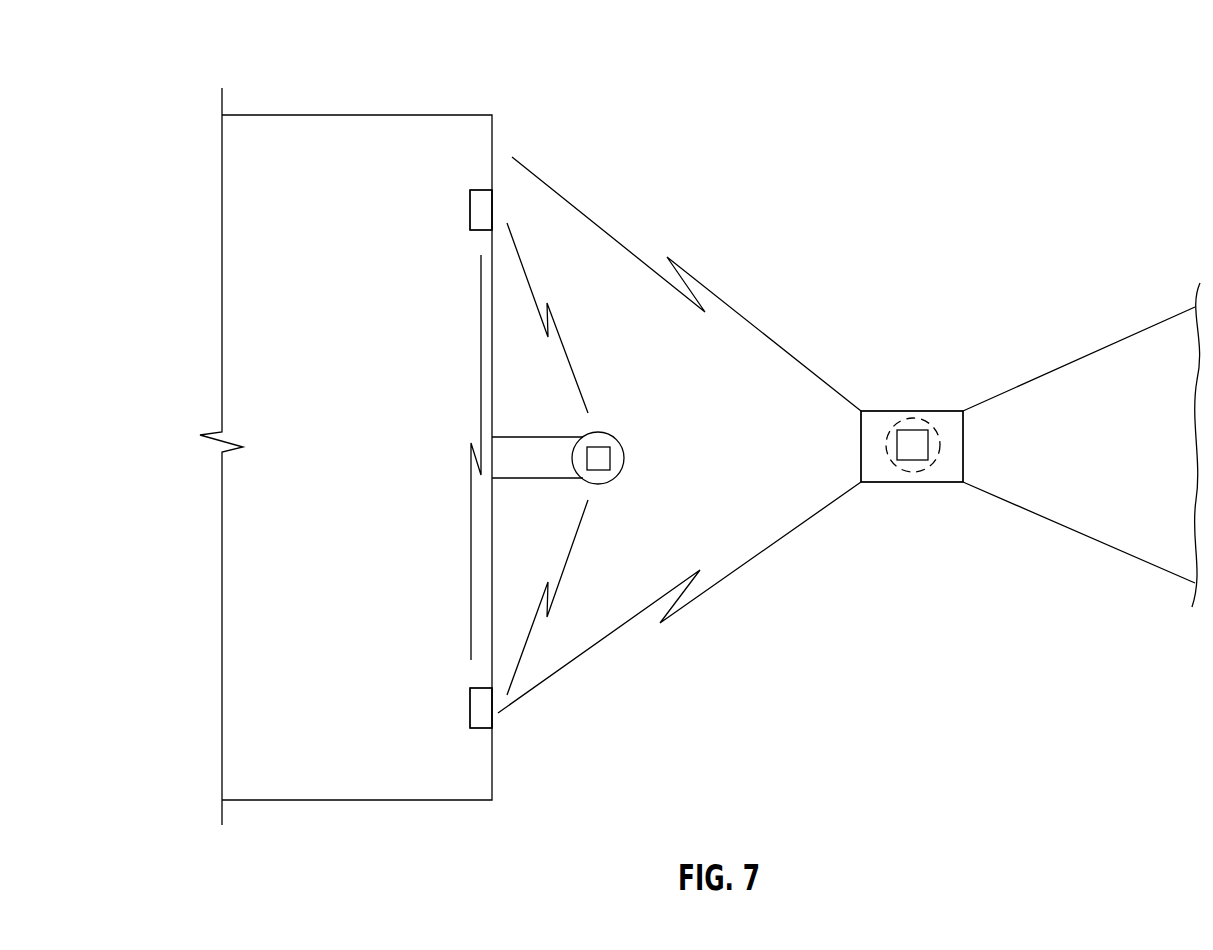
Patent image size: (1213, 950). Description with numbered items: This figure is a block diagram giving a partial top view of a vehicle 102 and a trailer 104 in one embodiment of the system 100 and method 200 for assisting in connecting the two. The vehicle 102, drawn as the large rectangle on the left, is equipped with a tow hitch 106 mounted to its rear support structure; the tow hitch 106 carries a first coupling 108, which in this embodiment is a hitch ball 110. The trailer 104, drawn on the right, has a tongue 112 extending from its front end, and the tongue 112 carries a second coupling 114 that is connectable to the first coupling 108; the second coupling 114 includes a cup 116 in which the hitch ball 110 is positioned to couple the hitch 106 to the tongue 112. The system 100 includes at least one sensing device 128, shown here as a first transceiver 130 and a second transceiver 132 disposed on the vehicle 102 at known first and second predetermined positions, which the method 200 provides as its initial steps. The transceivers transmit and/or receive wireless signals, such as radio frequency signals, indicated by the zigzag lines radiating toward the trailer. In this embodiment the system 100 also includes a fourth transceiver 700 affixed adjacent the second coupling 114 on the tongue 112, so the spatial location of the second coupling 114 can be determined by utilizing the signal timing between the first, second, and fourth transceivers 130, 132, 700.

The system 100 is at (139, 63).
The vehicle 102 is at (357, 115).
The trailer 104 is at (1003, 500).
The tow hitch 106 is at (540, 432).
The first coupling 108 is at (632, 444).
The hitch ball 110 is at (600, 433).
The tongue 112 is at (939, 403).
The second coupling 114 is at (906, 401).
The cup 116 is at (886, 449).
The sensing device 128 is at (459, 212).
The first transceiver 130 is at (483, 688).
The second transceiver 132 is at (483, 190).
The method 200 is at (604, 472).
The fourth transceiver 700 is at (912, 466).